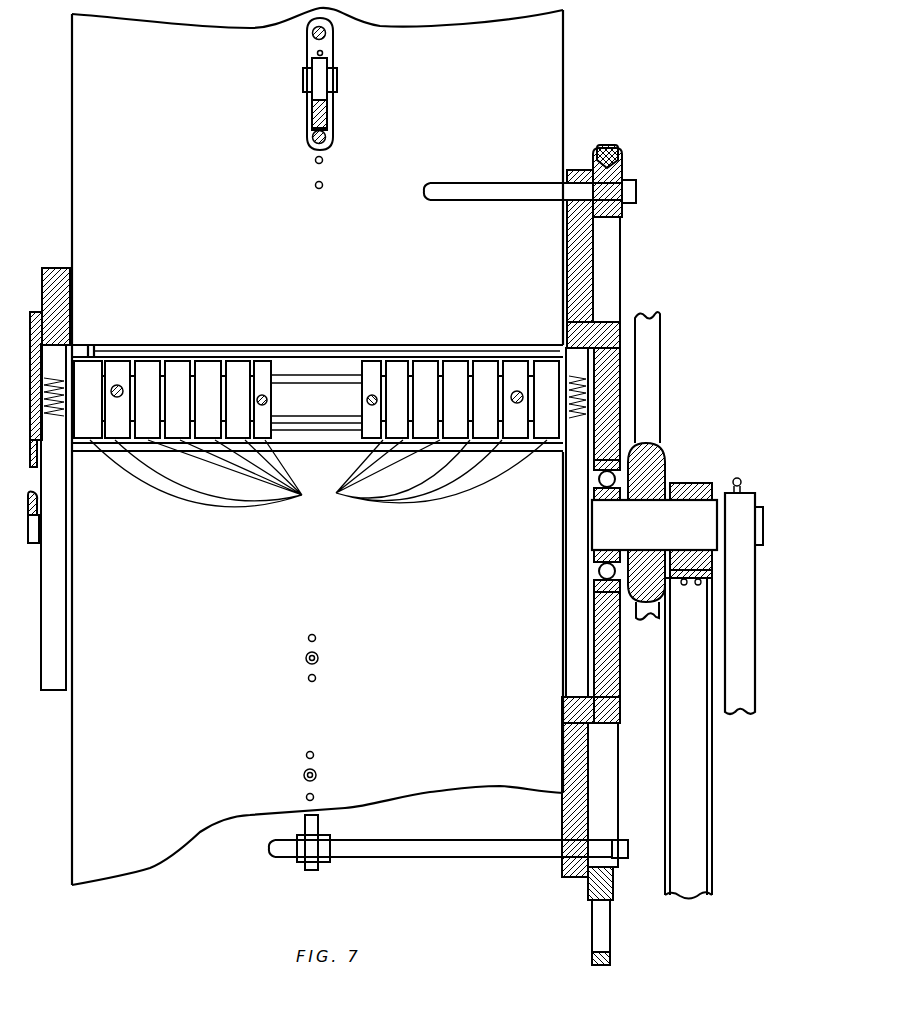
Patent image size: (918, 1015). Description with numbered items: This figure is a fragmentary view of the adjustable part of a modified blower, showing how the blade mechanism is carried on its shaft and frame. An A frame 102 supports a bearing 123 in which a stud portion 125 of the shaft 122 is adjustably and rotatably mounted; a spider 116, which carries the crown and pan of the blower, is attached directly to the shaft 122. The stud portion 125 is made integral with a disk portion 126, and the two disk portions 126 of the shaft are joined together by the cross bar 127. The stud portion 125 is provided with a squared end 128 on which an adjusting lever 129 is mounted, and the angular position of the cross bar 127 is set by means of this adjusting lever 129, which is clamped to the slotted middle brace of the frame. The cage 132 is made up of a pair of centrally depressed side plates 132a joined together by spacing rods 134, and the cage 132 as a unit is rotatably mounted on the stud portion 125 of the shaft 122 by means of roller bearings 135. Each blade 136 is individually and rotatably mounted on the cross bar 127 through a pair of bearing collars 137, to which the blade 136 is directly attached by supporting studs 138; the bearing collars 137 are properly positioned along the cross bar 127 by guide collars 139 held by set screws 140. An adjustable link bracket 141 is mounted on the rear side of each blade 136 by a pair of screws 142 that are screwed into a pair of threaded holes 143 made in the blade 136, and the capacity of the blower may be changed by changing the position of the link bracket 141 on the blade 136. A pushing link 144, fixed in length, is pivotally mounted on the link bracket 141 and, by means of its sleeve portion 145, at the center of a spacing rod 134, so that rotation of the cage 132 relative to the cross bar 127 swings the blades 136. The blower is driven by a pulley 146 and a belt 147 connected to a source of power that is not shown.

The A frame 102 is at (714, 799).
The spider 116 is at (662, 446).
The shaft 122 is at (732, 476).
The bearing 123 is at (717, 496).
The stud portion 125 is at (648, 512).
The disk portion 126 is at (57, 641).
The cross bar 127 is at (336, 356).
The squared end 128 is at (763, 530).
The adjusting lever 129 is at (745, 635).
The cage 132 is at (622, 394).
The side plate 132a is at (58, 268).
The spacing rod 134 is at (456, 183).
The roller bearing 135 is at (592, 560).
The blade 136 is at (563, 98).
The bearing collar 137 is at (318, 474).
The supporting stud 138 is at (238, 357).
The guide collar 139 is at (360, 384).
The set screw 140 is at (368, 401).
The adjustable link bracket 141 is at (333, 82).
The screw 142 is at (328, 37).
The threaded hole 143 is at (316, 54).
The pushing link 144 is at (330, 117).
The sleeve portion 145 is at (322, 847).
The pulley 146 is at (624, 171).
The belt 147 is at (618, 153).